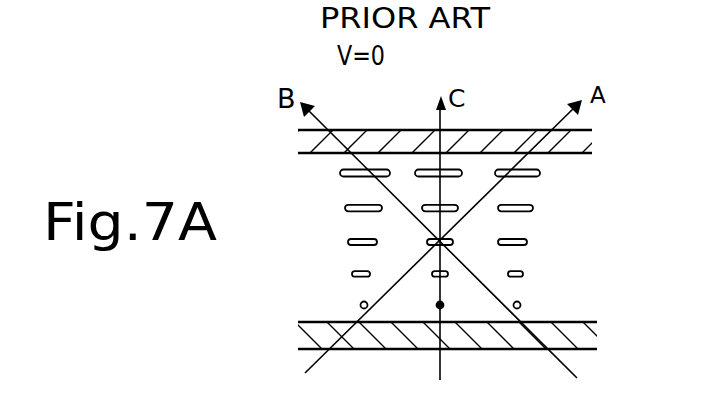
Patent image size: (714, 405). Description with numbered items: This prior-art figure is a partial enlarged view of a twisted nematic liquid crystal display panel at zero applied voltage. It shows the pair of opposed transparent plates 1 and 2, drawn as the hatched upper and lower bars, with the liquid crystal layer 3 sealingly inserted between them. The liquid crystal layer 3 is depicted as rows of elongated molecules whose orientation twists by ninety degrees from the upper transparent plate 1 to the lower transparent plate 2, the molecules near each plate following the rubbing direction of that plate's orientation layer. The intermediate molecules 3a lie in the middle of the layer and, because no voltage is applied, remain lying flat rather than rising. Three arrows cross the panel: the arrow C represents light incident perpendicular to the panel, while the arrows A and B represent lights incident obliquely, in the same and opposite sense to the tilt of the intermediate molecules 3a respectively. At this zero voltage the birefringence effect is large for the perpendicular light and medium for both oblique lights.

The upper transparent plate 1 is at (587, 145).
The lower transparent plate 2 is at (592, 335).
The liquid crystal layer 3 is at (577, 255).
The intermediate molecules of the liquid crystal 3a is at (523, 238).